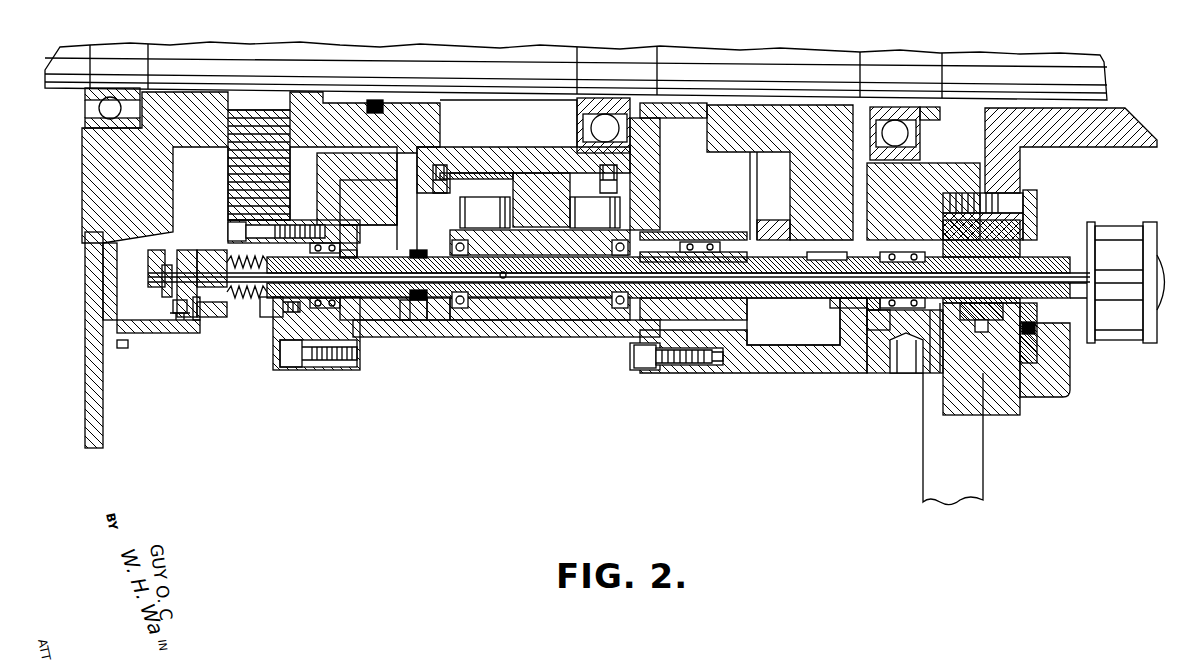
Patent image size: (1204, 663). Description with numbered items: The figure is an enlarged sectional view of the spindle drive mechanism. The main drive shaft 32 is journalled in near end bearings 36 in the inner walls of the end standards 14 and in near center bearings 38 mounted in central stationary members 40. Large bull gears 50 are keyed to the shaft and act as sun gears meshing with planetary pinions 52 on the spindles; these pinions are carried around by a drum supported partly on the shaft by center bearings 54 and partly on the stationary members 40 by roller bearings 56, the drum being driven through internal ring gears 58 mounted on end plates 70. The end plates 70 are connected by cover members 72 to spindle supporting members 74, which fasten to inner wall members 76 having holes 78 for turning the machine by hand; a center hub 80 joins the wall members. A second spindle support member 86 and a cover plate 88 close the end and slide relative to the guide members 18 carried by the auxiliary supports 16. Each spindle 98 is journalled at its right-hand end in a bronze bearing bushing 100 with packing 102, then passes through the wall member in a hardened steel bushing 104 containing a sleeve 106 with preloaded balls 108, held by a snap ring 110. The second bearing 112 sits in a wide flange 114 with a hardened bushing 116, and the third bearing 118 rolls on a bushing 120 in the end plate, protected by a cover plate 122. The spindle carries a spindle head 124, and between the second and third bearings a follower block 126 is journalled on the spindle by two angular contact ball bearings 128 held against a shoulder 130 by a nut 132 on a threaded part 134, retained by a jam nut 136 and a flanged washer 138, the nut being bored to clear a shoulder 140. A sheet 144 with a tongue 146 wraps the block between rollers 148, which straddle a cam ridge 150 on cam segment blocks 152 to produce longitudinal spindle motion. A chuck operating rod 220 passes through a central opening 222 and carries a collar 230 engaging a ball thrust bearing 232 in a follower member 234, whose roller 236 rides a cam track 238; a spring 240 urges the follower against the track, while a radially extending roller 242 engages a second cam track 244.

The end standards 14 is at (103, 416).
The auxiliary supports 16 is at (955, 463).
The guide members 18 is at (1000, 393).
The main drive shaft 32 is at (215, 68).
The near end bearings 36 is at (90, 102).
The near center bearings 38 is at (590, 108).
The central stationary members 40 is at (457, 147).
The bull gears 50 is at (800, 172).
The planetary pinions 52 is at (793, 321).
The center bearings 54 is at (905, 125).
The roller bearings 56 is at (393, 146).
The internal ring gears 58 is at (232, 174).
The end plates 70 is at (368, 213).
The cover members 72 is at (383, 330).
The spindle supporting members 74 is at (732, 370).
The inner wall members 76 is at (942, 187).
The holes 78 is at (915, 352).
The center hub 80 is at (1097, 130).
The second spindle support member 86 is at (1038, 226).
The cover plate 88 is at (1025, 368).
The spindle 98 is at (780, 298).
The bronze bearing bushing 100 is at (1032, 311).
The packing 102 is at (1030, 328).
The hardened steel bushing 104 is at (848, 306).
The sleeve 106 is at (880, 312).
The balls 108 is at (870, 306).
The snap ring 110 is at (945, 318).
The second bearing 112 is at (672, 365).
The wide flange 114 is at (711, 233).
The hardened bushing 116 is at (650, 371).
The third bearing 118 is at (350, 255).
The bushing 120 is at (350, 301).
The cover plate 122 is at (266, 320).
The spindle head 124 is at (1105, 299).
The follower block 126 is at (537, 308).
The angular contact ball bearings 128 is at (460, 306).
The shoulder 130 is at (650, 234).
The nut 132 is at (432, 302).
The threaded part 134 is at (397, 260).
The jam nut 136 is at (418, 299).
The flanged washer 138 is at (418, 302).
The shoulder 140 is at (452, 250).
The sheet 144 is at (562, 322).
The tongue 146 is at (548, 215).
The rollers 148 is at (475, 205).
The cam ridge 150 is at (525, 200).
The cam segment blocks 152 is at (450, 177).
The chuck operating rod 220 is at (582, 287).
The central opening 222 is at (503, 283).
The collar 230 is at (205, 292).
The ball thrust bearing 232 is at (187, 252).
The follower member 234 is at (150, 253).
The roller 236 is at (161, 289).
The cam track 238 is at (143, 273).
The spring 240 is at (240, 296).
The radially extending roller 242 is at (178, 317).
The second cam track 244 is at (196, 334).